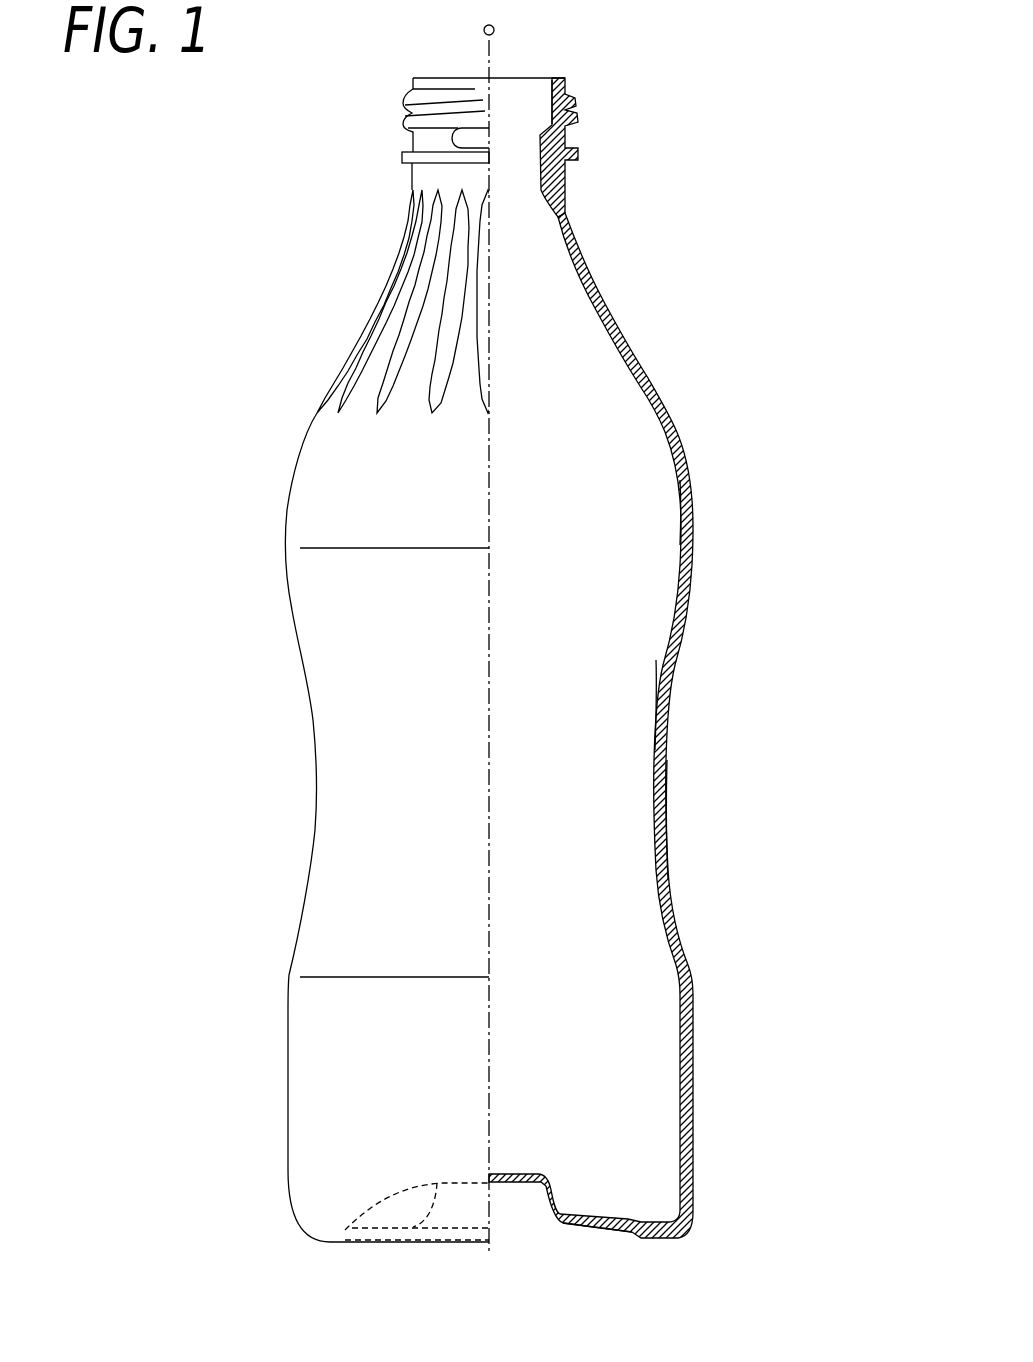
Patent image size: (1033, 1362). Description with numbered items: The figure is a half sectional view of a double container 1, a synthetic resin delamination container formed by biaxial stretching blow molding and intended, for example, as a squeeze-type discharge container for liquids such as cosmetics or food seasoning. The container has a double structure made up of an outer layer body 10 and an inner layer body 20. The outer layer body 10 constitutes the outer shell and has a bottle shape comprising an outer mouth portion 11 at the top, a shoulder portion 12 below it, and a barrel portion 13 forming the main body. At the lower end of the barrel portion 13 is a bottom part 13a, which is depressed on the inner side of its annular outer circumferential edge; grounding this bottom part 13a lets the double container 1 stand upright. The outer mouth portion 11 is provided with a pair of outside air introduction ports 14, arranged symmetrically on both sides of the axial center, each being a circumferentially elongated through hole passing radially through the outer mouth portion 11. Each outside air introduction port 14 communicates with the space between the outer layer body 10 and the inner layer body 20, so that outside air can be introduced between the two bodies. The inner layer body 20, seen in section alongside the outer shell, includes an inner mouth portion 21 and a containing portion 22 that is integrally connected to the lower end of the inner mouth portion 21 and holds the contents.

The double container 1 is at (760, 74).
The outer layer body 10 is at (694, 471).
The outer mouth portion 11 is at (584, 128).
The shoulder portion 12 is at (656, 370).
The barrel portion 13 is at (674, 778).
The bottom part 13a is at (583, 1224).
The outside air introduction port 14 is at (453, 135).
The inner layer body 20 is at (673, 505).
The inner mouth portion 21 is at (548, 95).
The containing portion 22 is at (653, 688).